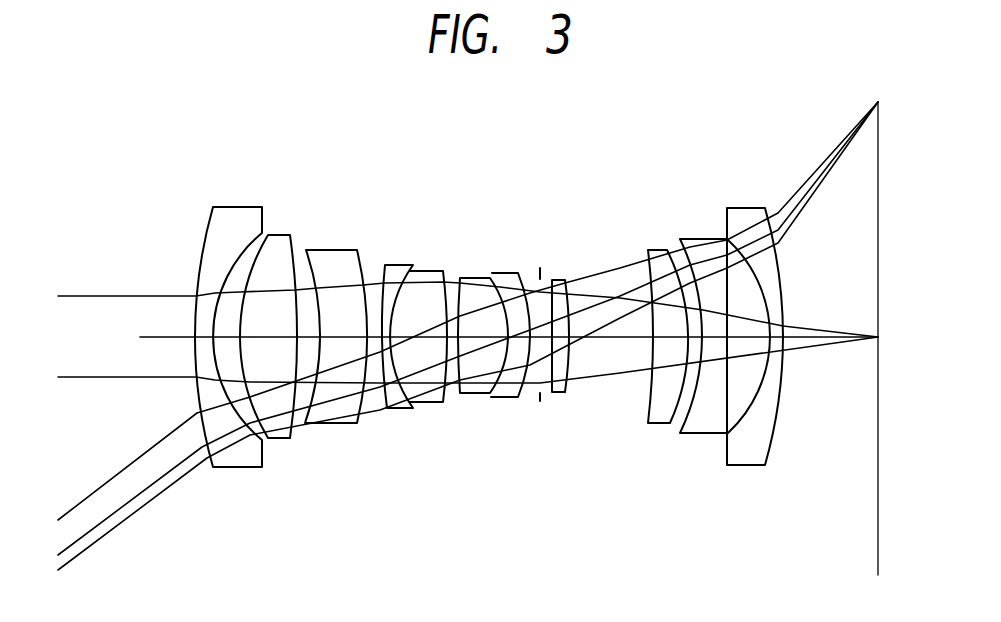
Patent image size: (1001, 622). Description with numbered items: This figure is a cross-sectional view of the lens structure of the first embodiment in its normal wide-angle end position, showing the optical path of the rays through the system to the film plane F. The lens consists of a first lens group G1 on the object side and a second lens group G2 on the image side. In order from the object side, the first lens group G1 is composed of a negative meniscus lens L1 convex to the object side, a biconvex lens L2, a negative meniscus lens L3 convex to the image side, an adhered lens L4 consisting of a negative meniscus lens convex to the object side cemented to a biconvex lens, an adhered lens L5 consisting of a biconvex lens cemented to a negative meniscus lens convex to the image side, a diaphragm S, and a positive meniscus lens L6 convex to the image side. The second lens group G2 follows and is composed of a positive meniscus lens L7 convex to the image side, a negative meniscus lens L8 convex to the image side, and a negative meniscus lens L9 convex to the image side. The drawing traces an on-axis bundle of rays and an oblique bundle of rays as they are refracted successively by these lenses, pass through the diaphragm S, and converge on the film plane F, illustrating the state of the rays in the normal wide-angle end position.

The first lens group G1 is at (588, 151).
The second lens group G2 is at (778, 151).
The negative meniscus lens L1 is at (242, 207).
The biconvex lens L2 is at (285, 235).
The negative meniscus lens L3 is at (335, 250).
The adhered lens L4 is at (448, 258).
The adhered lens L5 is at (522, 258).
The positive meniscus lens L6 is at (560, 280).
The positive meniscus lens L7 is at (650, 250).
The negative meniscus lens L8 is at (700, 239).
The negative meniscus lens L9 is at (756, 208).
The diaphragm S is at (540, 268).
The film plane F is at (874, 324).